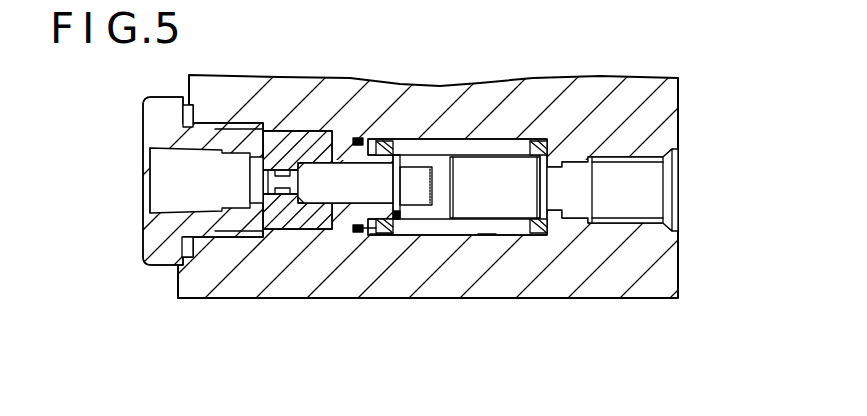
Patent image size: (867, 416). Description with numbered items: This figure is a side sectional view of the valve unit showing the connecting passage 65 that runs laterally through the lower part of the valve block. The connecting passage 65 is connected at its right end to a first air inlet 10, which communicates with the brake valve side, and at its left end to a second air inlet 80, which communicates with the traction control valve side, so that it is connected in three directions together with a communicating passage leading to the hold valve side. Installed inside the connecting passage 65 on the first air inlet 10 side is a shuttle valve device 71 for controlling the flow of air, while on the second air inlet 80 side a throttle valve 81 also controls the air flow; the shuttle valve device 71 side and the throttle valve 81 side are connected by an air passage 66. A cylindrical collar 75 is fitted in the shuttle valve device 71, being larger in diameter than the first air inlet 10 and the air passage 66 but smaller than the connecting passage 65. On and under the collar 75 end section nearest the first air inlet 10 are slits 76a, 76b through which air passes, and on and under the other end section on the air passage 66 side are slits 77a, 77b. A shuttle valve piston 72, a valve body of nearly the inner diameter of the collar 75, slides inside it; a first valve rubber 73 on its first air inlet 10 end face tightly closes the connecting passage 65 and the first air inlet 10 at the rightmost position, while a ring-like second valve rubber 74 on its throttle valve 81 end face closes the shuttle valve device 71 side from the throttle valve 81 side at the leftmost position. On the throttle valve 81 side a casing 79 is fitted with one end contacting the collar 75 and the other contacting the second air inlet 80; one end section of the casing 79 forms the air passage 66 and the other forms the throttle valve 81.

The first air inlet 10 is at (650, 180).
The connecting passage 65 is at (371, 240).
The air passage 66 is at (327, 188).
The shuttle valve device 71 is at (500, 245).
The shuttle valve piston 72 is at (440, 170).
The first valve rubber 73 is at (479, 155).
The second valve rubber 74 is at (380, 240).
The collar 75 is at (488, 238).
The slit 76a is at (528, 139).
The slit 76b is at (530, 236).
The slit 77a is at (406, 139).
The slit 77b is at (403, 237).
The casing 79 is at (283, 183).
The second air inlet 80 is at (167, 170).
The throttle valve 81 is at (250, 243).